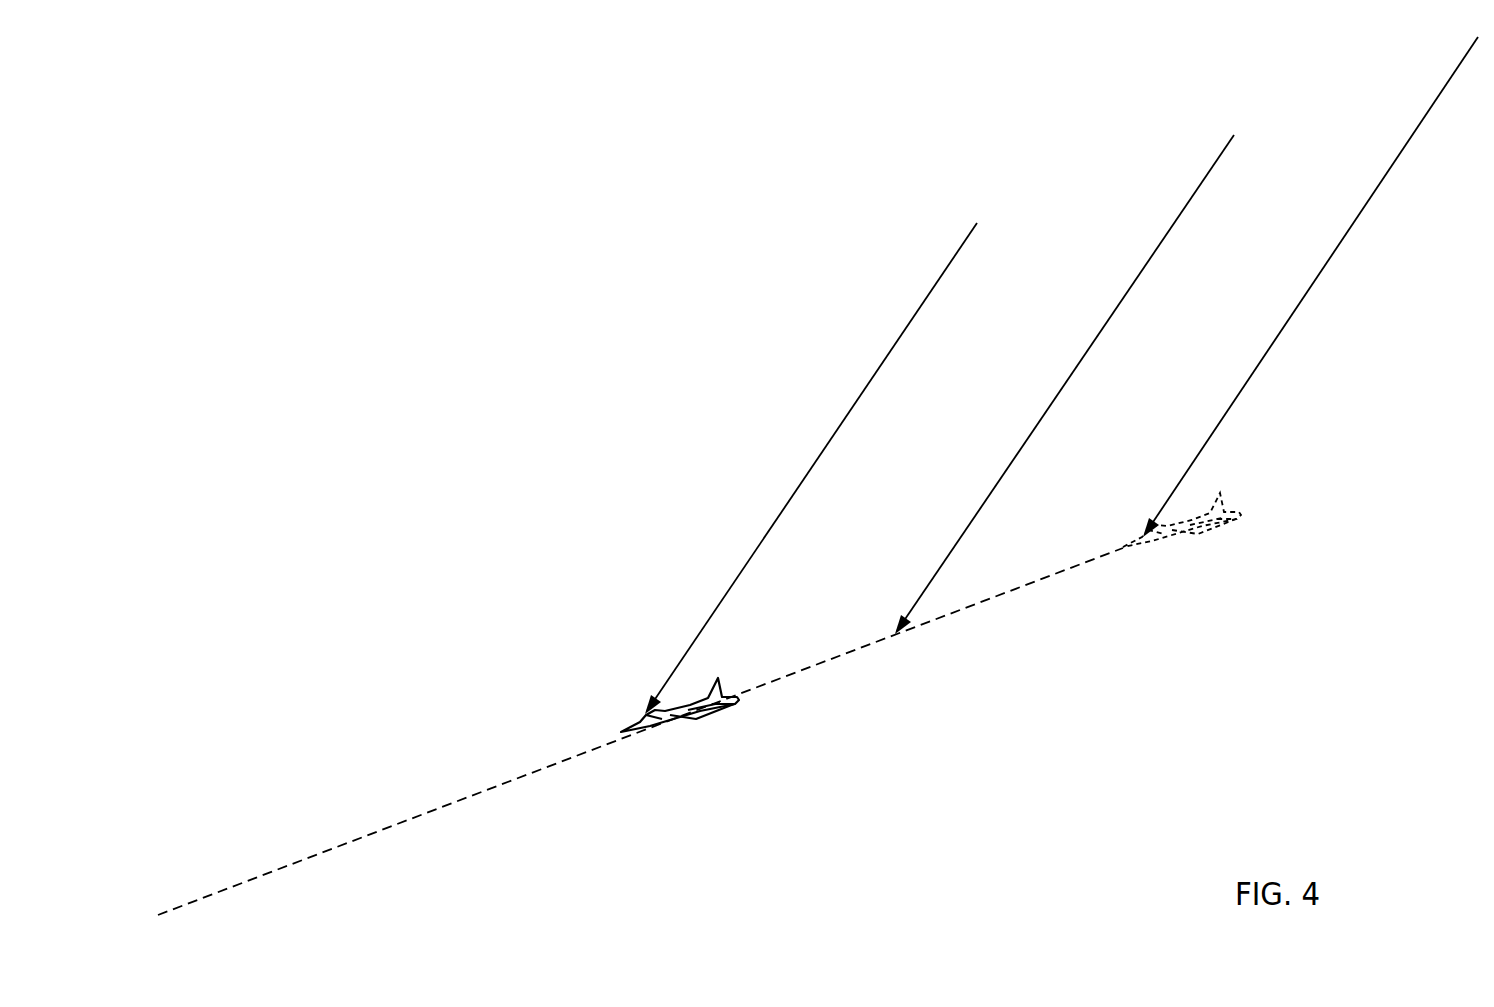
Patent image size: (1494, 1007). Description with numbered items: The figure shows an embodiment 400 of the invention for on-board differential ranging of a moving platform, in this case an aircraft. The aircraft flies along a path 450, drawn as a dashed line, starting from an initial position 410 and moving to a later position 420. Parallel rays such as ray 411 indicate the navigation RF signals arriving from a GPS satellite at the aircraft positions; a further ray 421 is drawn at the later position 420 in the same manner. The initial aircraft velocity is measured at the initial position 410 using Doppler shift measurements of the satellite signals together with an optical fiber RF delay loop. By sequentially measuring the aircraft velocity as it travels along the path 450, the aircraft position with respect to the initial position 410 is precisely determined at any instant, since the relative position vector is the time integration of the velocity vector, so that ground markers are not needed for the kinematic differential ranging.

The embodiment for on-board differential ranging 400 is at (1272, 792).
The initial position 410 is at (1203, 503).
The ray 411 is at (1310, 287).
The position 420 is at (702, 687).
The attitude vector of aircraft 421 is at (811, 468).
The path 450 is at (640, 731).